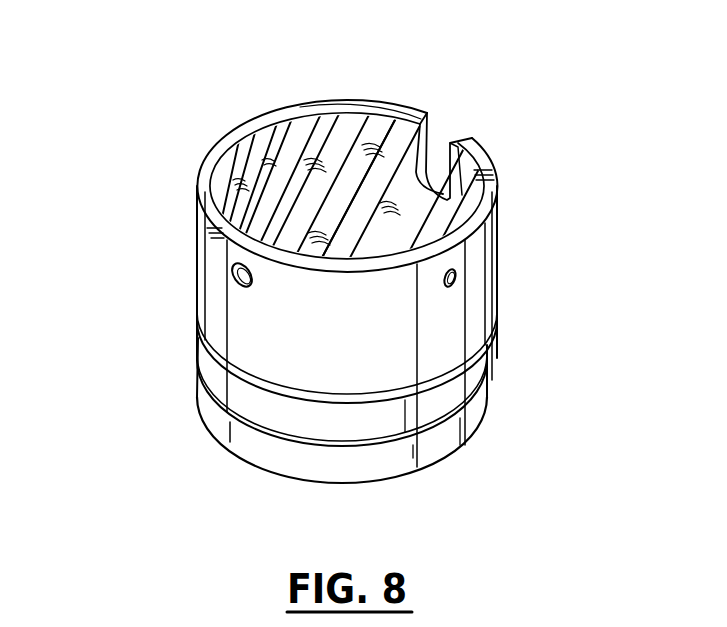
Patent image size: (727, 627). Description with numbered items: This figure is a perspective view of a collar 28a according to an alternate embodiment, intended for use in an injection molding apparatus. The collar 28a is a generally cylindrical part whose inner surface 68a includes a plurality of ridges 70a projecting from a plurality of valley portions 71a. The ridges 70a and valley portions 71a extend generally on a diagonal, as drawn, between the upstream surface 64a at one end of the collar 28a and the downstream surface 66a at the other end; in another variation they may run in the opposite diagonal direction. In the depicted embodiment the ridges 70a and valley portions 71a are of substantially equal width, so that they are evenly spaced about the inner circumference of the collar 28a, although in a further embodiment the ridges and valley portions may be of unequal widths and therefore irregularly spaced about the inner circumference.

The collar 28a is at (352, 256).
The upstream surface 64a is at (203, 163).
The downstream surface 66a is at (458, 448).
The inner surface 68a is at (336, 132).
The ridges 70a is at (356, 133).
The valley portions 71a is at (427, 140).